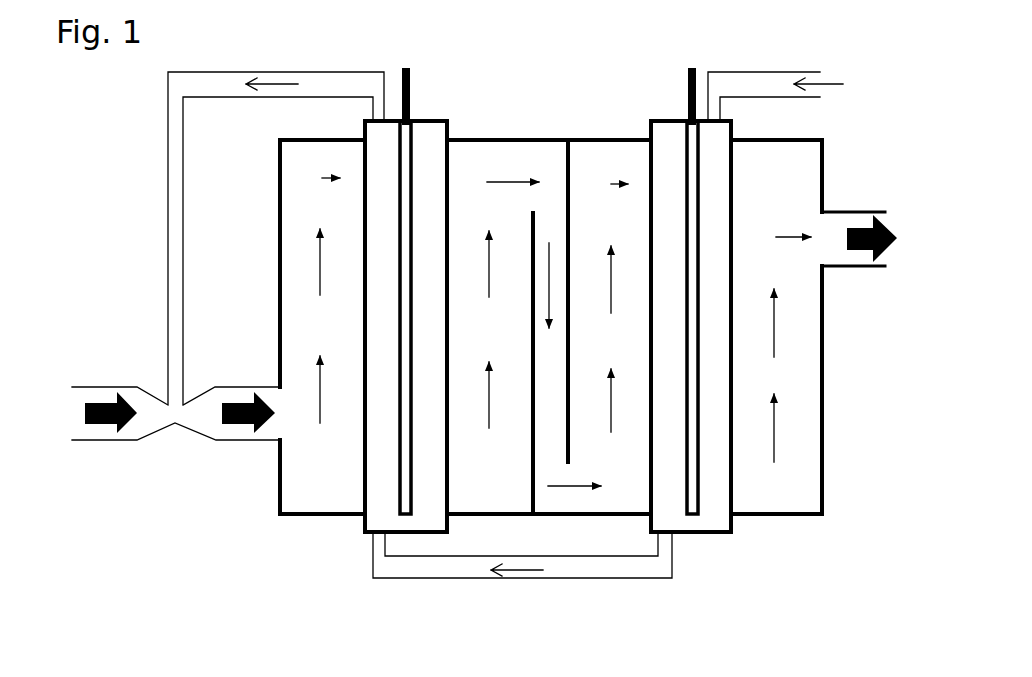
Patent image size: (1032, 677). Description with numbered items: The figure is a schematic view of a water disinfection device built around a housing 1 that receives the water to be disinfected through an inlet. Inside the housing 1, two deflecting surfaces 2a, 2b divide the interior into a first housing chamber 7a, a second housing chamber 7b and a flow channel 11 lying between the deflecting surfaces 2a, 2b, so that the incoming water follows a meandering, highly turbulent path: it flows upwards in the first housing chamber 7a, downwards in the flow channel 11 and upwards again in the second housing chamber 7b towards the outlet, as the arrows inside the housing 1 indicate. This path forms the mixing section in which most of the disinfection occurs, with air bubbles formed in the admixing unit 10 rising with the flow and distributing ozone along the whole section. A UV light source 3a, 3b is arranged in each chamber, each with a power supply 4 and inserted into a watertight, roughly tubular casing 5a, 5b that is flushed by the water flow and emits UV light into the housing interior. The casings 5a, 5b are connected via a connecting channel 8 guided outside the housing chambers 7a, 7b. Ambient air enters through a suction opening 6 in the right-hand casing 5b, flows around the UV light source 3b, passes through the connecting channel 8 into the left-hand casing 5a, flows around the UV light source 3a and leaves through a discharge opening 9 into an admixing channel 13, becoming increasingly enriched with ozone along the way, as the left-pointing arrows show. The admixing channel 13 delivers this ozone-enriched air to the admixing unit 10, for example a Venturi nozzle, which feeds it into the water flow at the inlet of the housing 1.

The housing 1 is at (802, 517).
The deflecting surface 2a is at (533, 459).
The deflecting surface 2b is at (568, 197).
The UV light source 3a is at (400, 430).
The UV light source 3b is at (700, 498).
The power supply 4 is at (408, 83).
The casing 5a is at (365, 432).
The casing 5b is at (732, 450).
The suction opening 6 is at (720, 112).
The first housing chamber 7a is at (308, 461).
The second housing chamber 7b is at (807, 426).
The connecting channel 8 is at (595, 580).
The discharge opening 9 is at (373, 103).
The admixing unit 10 is at (164, 478).
The flow channel 11 is at (549, 403).
The admixing channel 13 is at (168, 182).